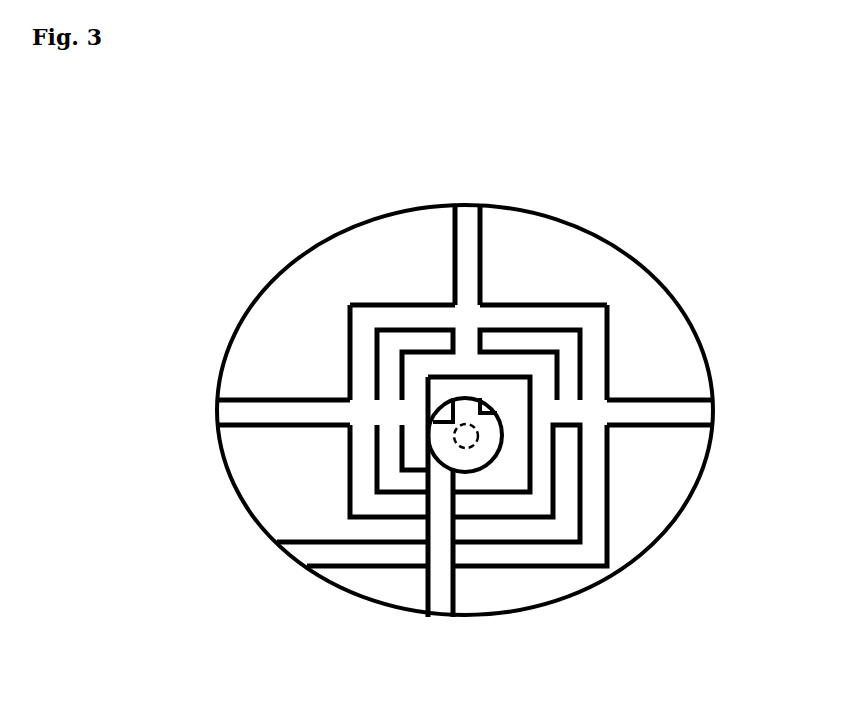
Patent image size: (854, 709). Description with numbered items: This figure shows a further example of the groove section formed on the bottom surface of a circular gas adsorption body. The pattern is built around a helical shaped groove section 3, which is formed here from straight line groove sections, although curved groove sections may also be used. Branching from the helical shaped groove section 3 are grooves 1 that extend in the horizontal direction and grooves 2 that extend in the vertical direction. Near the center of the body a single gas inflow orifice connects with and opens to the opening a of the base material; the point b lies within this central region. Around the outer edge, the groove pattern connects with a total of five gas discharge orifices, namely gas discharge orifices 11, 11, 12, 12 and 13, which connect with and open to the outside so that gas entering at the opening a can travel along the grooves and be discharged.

The groove 1 is at (660, 415).
The groove 2 is at (468, 266).
The helical shaped groove section 3 is at (528, 557).
The gas discharge orifice 11 is at (232, 410).
The gas discharge orifice 12 is at (467, 207).
The gas discharge orifice 13 is at (293, 557).
The opening a is at (478, 402).
The center point b is at (455, 450).